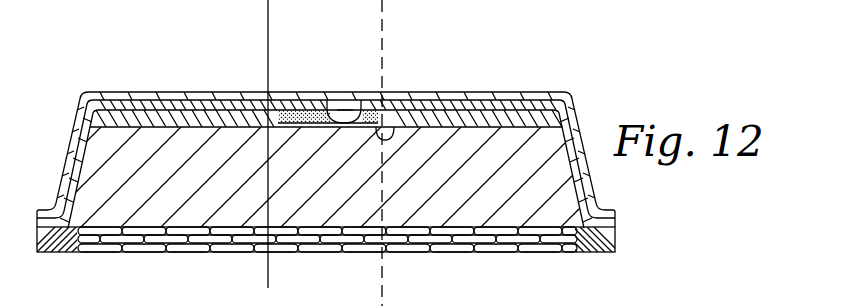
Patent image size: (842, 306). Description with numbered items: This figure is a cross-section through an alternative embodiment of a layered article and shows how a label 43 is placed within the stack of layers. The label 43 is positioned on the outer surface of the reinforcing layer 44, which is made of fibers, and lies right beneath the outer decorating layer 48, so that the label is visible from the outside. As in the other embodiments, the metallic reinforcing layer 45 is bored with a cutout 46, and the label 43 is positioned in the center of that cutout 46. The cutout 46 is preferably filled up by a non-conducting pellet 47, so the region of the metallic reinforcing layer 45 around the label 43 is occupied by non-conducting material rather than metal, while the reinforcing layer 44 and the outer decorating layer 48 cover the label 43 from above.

The label 43 is at (325, 103).
The reinforcing layer 44 is at (462, 108).
The metallic reinforcing layer 45 is at (506, 100).
The cutout 46 is at (401, 130).
The non-conducting pellet 47 is at (285, 103).
The outer decorating layer 48 is at (200, 97).